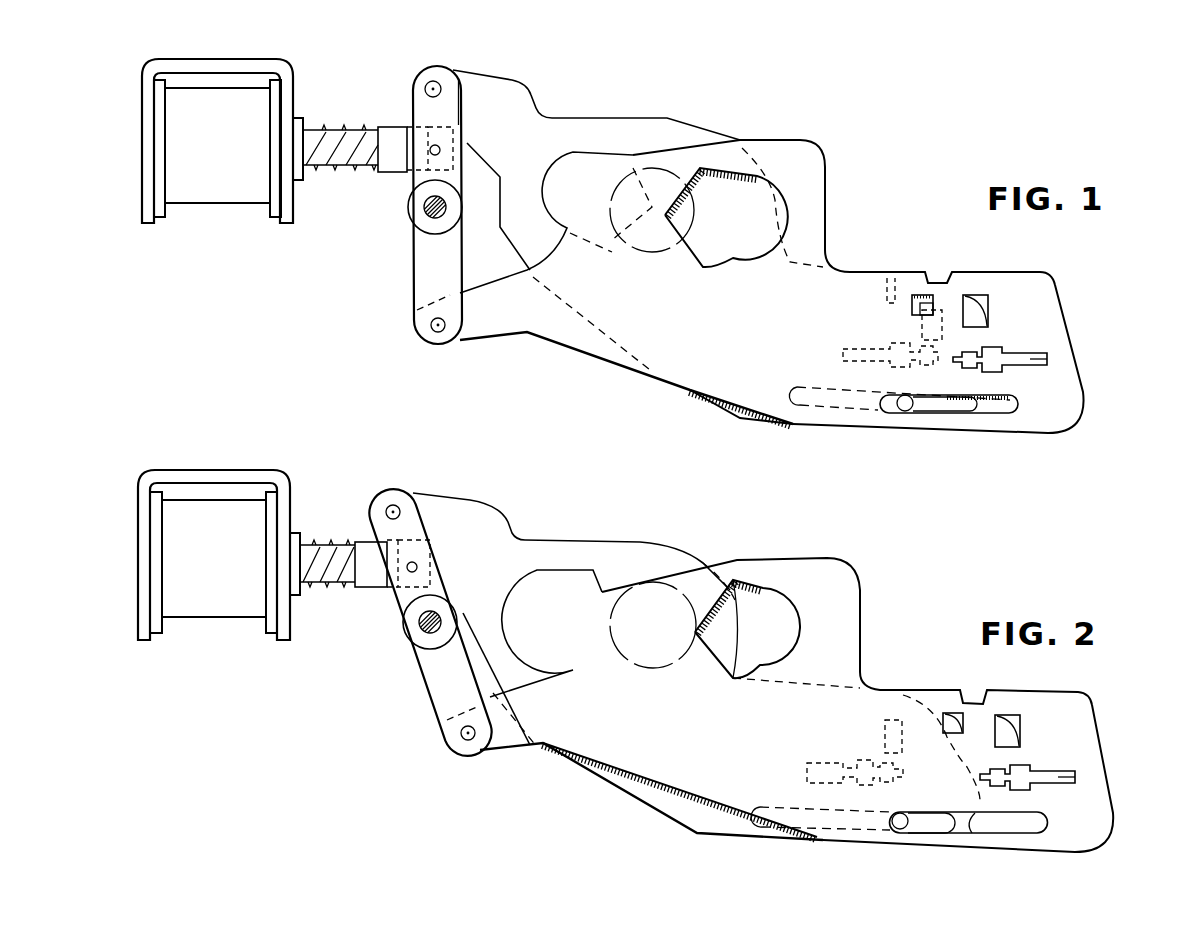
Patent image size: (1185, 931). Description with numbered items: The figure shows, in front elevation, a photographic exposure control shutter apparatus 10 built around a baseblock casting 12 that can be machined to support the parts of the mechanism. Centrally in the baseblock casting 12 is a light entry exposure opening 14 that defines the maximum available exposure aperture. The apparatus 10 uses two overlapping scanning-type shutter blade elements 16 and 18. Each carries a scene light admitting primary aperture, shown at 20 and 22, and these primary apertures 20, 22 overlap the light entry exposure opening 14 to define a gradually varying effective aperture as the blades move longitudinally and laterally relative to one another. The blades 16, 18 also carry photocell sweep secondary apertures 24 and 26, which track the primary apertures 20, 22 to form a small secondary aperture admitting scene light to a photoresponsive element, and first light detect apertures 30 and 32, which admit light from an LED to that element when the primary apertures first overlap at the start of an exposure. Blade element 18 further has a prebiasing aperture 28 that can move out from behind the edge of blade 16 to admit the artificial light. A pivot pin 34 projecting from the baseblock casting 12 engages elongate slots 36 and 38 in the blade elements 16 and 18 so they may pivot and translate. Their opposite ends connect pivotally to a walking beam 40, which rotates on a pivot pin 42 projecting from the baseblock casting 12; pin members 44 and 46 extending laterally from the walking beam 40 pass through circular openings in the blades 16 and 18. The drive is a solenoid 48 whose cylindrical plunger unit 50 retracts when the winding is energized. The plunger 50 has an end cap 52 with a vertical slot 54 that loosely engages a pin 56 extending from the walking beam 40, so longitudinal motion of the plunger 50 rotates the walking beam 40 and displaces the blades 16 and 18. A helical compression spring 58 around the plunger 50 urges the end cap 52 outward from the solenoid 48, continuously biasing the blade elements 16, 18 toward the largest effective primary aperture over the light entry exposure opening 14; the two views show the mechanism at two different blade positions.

In FIG. 1, the photographic exposure control shutter apparatus 10 is at (925, 108).
In FIG. 2, the photographic exposure control shutter apparatus 10 is at (992, 552).
In FIG. 1, the baseblock casting 12 is at (941, 209).
In FIG. 2, the baseblock casting 12 is at (940, 631).
In FIG. 1, the light entry exposure opening 14 is at (647, 257).
In FIG. 2, the light entry exposure opening 14 is at (650, 672).
In FIG. 1, the shutter blade element 16 is at (562, 118).
In FIG. 2, the shutter blade element 16 is at (470, 500).
In FIG. 1, the shutter blade element 18 is at (497, 338).
In FIG. 2, the shutter blade element 18 is at (500, 757).
In FIG. 1, the scene light admitting primary aperture 20 is at (560, 172).
In FIG. 2, the scene light admitting primary aperture 20 is at (537, 580).
In FIG. 1, the scene light admitting primary aperture 22 is at (722, 262).
In FIG. 2, the scene light admitting primary aperture 22 is at (765, 590).
In FIG. 1, the photocell sweep secondary aperture 24 is at (843, 355).
In FIG. 2, the photocell sweep secondary aperture 24 is at (840, 770).
In FIG. 1, the photocell sweep secondary aperture 26 is at (1047, 358).
In FIG. 2, the photocell sweep secondary aperture 26 is at (1077, 778).
In FIG. 1, the prebiasing aperture 28 is at (893, 280).
In FIG. 2, the prebiasing aperture 28 is at (952, 713).
In FIG. 1, the first light detect aperture 30 is at (912, 308).
In FIG. 2, the first light detect aperture 30 is at (885, 730).
In FIG. 1, the first light detect aperture 32 is at (990, 300).
In FIG. 2, the first light detect aperture 32 is at (1022, 718).
In FIG. 1, the pivot pin 34 is at (905, 410).
In FIG. 2, the pivot pin 34 is at (905, 830).
In FIG. 1, the elongate slot 36 is at (808, 405).
In FIG. 2, the elongate slot 36 is at (837, 830).
In FIG. 1, the elongate slot 38 is at (1003, 405).
In FIG. 2, the elongate slot 38 is at (1025, 835).
In FIG. 1, the walking beam 40 is at (410, 290).
In FIG. 2, the walking beam 40 is at (430, 703).
In FIG. 1, the pivot pin 42 is at (430, 212).
In FIG. 2, the pivot pin 42 is at (427, 627).
In FIG. 1, the pin member 44 is at (437, 84).
In FIG. 2, the pin member 44 is at (396, 506).
In FIG. 1, the pin member 46 is at (436, 331).
In FIG. 2, the pin member 46 is at (465, 738).
In FIG. 1, the solenoid 48 is at (210, 237).
In FIG. 2, the solenoid 48 is at (178, 688).
In FIG. 1, the plunger unit 50 is at (322, 128).
In FIG. 2, the plunger unit 50 is at (320, 540).
In FIG. 1, the end cap 52 is at (395, 172).
In FIG. 2, the end cap 52 is at (365, 542).
In FIG. 1, the vertical slot 54 is at (432, 132).
In FIG. 2, the vertical slot 54 is at (405, 588).
In FIG. 1, the pin 56 is at (440, 152).
In FIG. 2, the pin 56 is at (417, 566).
In FIG. 1, the helical compression spring 58 is at (338, 170).
In FIG. 2, the helical compression spring 58 is at (312, 597).